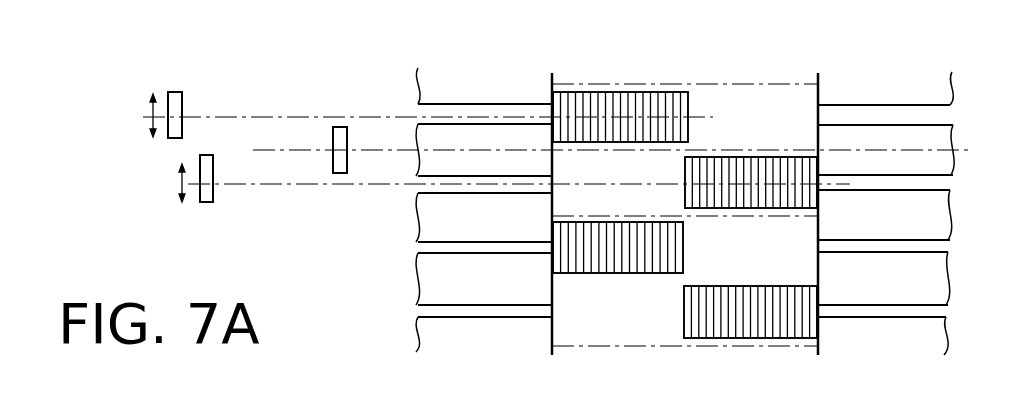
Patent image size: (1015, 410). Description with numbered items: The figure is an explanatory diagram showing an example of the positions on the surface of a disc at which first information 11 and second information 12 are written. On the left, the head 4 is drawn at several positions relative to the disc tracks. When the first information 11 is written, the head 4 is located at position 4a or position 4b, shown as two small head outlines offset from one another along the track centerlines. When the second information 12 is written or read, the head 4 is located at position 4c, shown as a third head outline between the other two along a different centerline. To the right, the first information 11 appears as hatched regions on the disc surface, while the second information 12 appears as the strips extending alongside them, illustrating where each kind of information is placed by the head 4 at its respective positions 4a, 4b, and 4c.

The head 4 is at (214, 87).
The head position for writing first information 4a is at (173, 138).
The head position for writing first information 4b is at (200, 201).
The head position for second information 4c is at (339, 174).
The first information 11 is at (628, 108).
The second information 12 is at (460, 138).